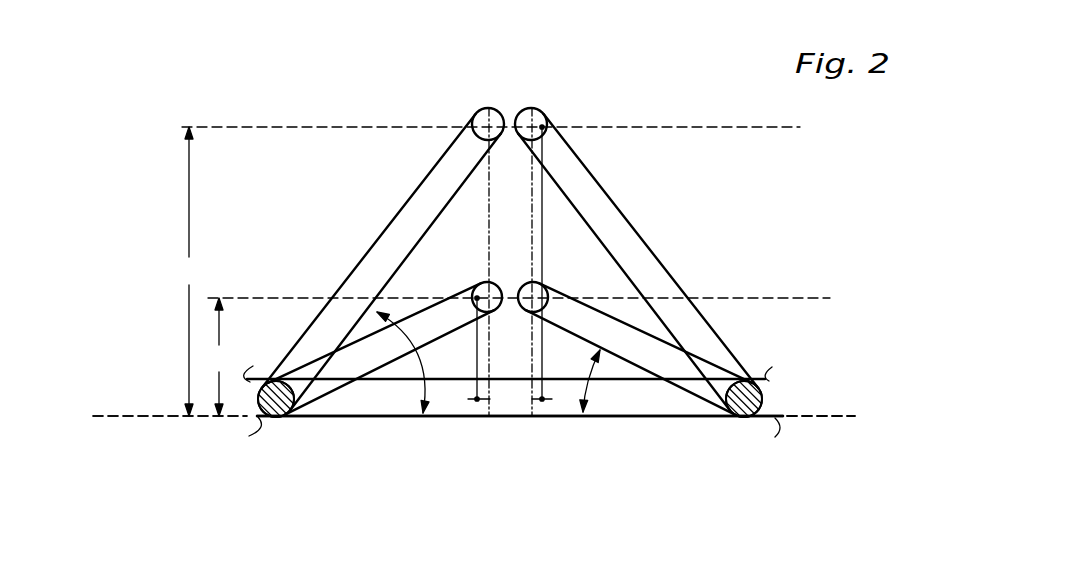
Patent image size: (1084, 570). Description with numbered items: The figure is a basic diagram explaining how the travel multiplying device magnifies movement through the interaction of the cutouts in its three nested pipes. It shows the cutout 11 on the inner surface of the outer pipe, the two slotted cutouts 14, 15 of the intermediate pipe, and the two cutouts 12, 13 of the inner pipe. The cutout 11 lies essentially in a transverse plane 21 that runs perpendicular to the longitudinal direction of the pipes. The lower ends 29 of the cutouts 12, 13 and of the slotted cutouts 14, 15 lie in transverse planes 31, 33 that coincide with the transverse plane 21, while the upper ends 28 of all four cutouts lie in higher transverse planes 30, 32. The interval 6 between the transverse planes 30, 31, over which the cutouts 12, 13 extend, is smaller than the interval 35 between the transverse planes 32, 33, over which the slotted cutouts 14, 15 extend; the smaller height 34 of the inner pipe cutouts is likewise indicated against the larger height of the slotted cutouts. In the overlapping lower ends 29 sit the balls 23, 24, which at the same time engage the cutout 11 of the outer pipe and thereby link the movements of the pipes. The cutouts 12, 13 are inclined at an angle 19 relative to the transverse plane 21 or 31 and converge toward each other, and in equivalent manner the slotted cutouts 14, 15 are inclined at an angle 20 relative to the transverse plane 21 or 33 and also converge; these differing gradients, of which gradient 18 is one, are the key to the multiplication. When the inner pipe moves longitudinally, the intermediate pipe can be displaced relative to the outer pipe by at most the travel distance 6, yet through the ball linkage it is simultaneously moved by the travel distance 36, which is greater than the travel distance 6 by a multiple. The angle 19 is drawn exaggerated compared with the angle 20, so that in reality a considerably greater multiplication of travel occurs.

The interval 6 is at (477, 367).
The cutout 11 is at (633, 395).
The cutout 12 is at (345, 363).
The cutout 13 is at (630, 345).
The slotted cutout 14 is at (408, 232).
The slotted cutout 15 is at (633, 250).
The gradient 18 is at (665, 418).
The angle 19 is at (580, 387).
The angle 20 is at (412, 370).
The transverse plane 21 is at (828, 415).
The ball 23 is at (298, 407).
The ball 24 is at (770, 393).
The upper end 28 is at (481, 118).
The lower end 29 is at (278, 405).
The transverse plane 30 is at (268, 298).
The transverse plane 31 is at (165, 415).
The transverse plane 32 is at (274, 126).
The transverse plane 33 is at (165, 415).
The lower loop height 34 is at (218, 357).
The interval 35 is at (186, 271).
The travel distance 36 is at (543, 203).